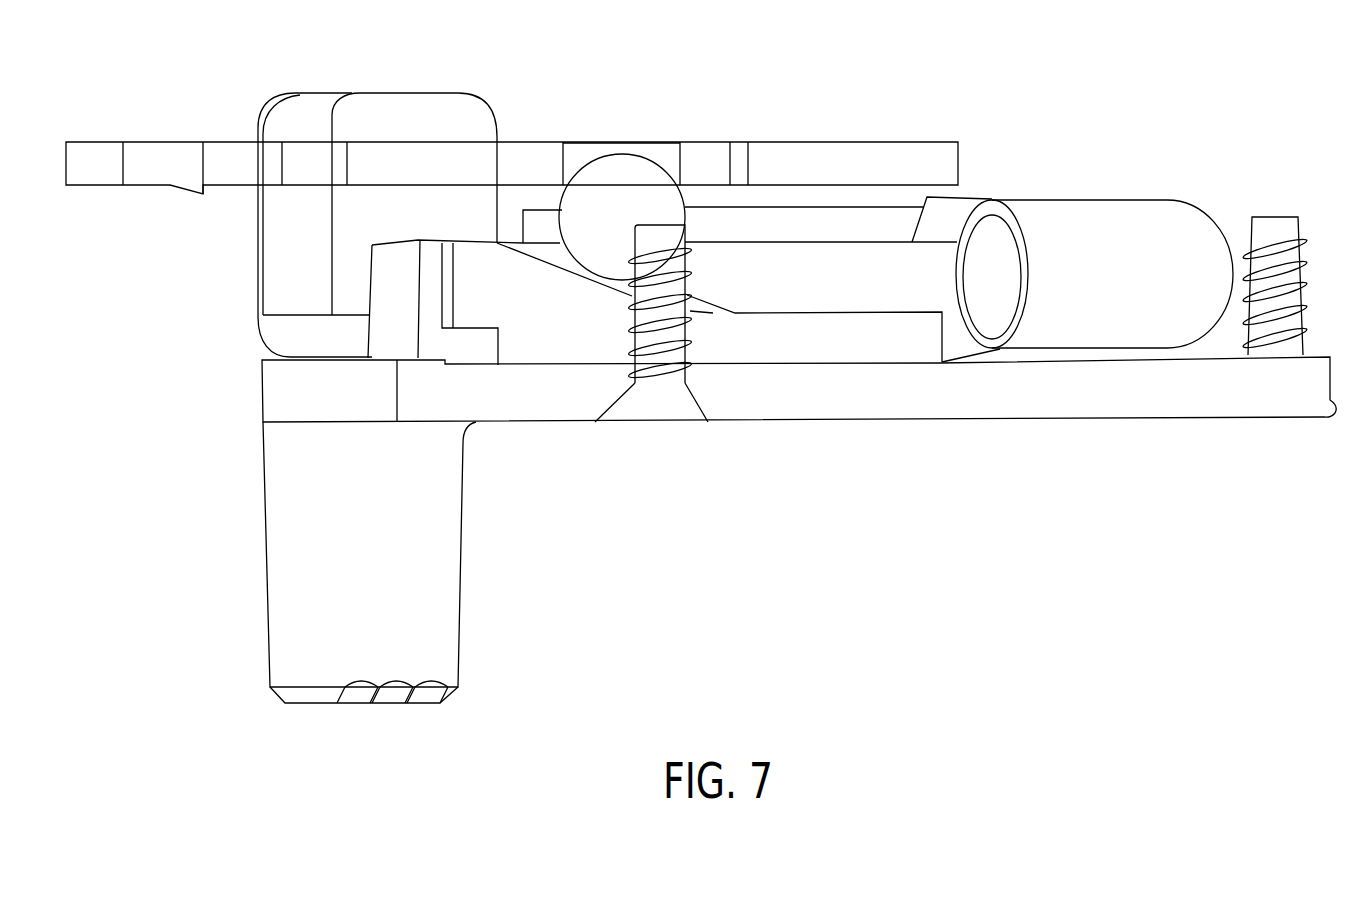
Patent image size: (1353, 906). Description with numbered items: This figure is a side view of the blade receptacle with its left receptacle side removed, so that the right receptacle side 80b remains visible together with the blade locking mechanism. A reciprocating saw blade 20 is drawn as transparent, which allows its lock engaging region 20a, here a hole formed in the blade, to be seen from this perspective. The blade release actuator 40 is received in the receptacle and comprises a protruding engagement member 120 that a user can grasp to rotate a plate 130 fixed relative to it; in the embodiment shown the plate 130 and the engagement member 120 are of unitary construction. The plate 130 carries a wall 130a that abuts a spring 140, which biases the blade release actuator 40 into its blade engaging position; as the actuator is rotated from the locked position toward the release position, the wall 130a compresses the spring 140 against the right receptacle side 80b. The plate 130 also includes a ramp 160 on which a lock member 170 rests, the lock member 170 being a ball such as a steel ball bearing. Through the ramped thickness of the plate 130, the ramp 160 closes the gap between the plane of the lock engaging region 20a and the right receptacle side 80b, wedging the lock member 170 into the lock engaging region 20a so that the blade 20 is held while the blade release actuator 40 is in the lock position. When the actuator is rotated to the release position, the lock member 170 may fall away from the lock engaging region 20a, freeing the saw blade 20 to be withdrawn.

The reciprocating saw blade 20 is at (218, 158).
The lock engaging region 20a is at (660, 155).
The blade release actuator 40 is at (226, 250).
The right receptacle side 80b is at (885, 410).
The protruding engagement member 120 is at (395, 90).
The plate 130 is at (817, 292).
The wall 130a is at (887, 222).
The spring 140 is at (1115, 242).
The ramp 160 is at (577, 268).
The lock member 170 is at (598, 208).